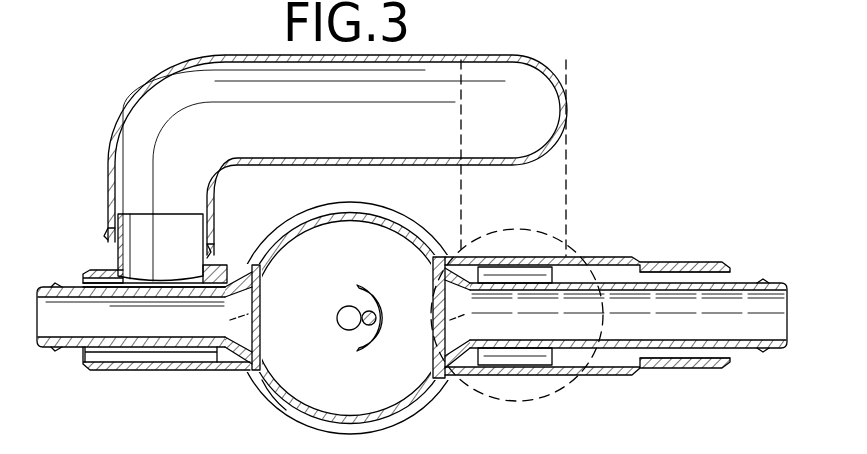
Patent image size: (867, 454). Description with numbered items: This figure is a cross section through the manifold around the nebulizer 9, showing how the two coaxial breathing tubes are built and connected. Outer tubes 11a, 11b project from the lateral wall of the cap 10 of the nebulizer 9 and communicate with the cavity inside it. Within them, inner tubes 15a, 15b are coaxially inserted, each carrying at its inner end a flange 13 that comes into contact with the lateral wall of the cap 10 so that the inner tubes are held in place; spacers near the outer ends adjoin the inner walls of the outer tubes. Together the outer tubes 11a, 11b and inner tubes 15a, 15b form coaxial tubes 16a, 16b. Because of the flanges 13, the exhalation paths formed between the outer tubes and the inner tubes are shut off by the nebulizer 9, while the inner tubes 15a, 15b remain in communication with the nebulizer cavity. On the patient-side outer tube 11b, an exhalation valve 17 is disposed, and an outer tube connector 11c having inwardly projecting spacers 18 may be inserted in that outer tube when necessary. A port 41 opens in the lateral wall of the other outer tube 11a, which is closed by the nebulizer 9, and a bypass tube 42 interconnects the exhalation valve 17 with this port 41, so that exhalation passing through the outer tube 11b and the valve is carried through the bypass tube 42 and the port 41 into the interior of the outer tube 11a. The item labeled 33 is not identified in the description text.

The nebulizer 9 is at (263, 226).
The cap 10 is at (418, 398).
The outer tube 11a is at (163, 370).
The outer tube 11b is at (522, 376).
The outer tube connector 11c is at (690, 369).
The flange 13 is at (236, 370).
The inner tube 15a is at (122, 348).
The inner tube 15b is at (620, 349).
The coaxial tube 16a is at (96, 372).
The coaxial tube 16b is at (650, 381).
The exhalation valve 17 is at (549, 396).
The spacer 18 is at (282, 402).
The pivot stem 33 is at (346, 330).
The port 41 is at (128, 262).
The bypass tube 42 is at (130, 104).